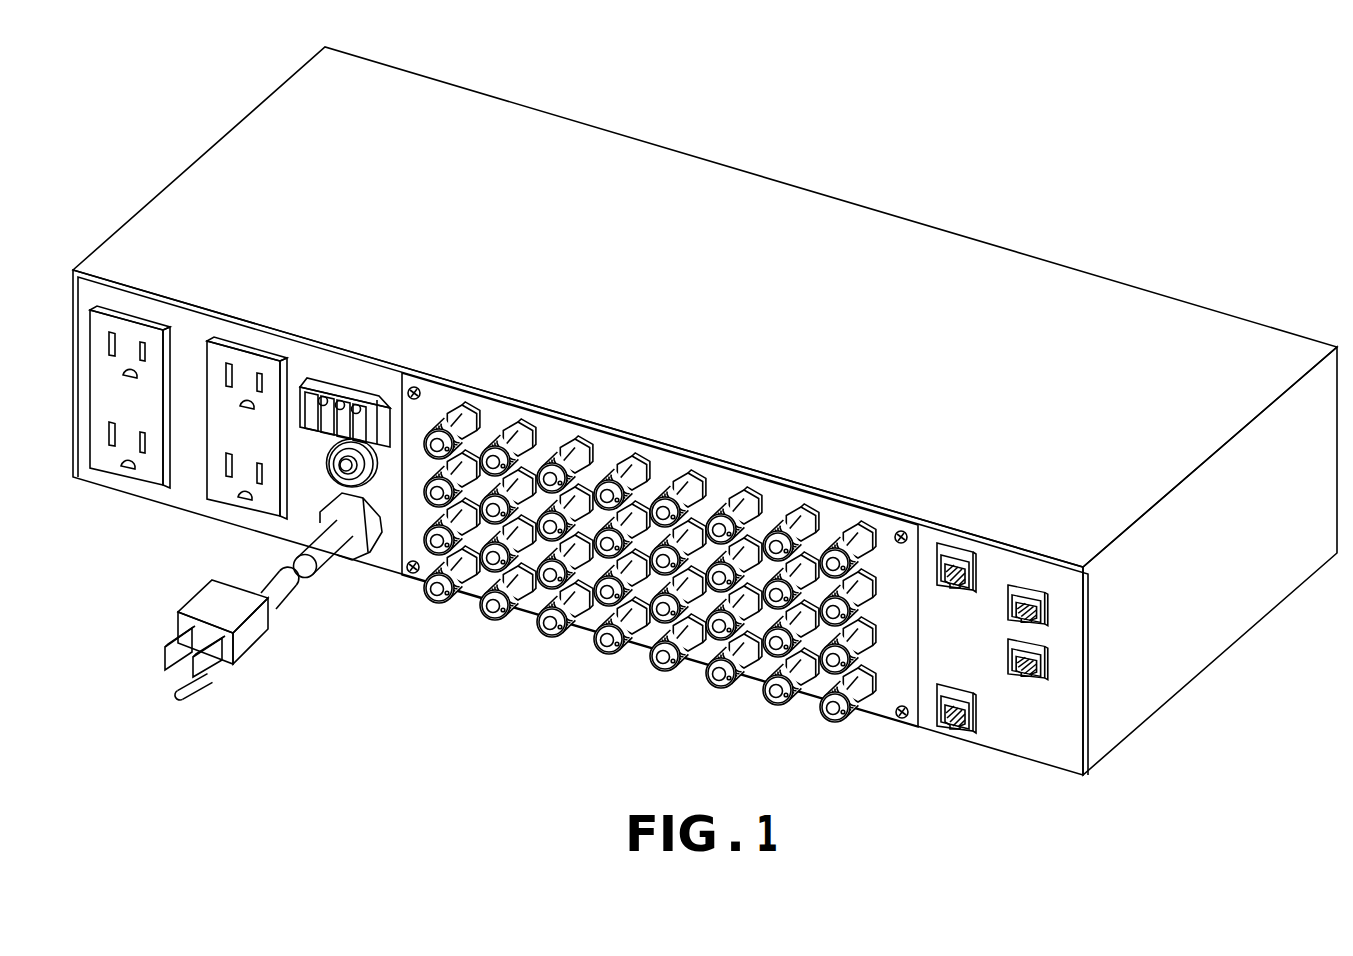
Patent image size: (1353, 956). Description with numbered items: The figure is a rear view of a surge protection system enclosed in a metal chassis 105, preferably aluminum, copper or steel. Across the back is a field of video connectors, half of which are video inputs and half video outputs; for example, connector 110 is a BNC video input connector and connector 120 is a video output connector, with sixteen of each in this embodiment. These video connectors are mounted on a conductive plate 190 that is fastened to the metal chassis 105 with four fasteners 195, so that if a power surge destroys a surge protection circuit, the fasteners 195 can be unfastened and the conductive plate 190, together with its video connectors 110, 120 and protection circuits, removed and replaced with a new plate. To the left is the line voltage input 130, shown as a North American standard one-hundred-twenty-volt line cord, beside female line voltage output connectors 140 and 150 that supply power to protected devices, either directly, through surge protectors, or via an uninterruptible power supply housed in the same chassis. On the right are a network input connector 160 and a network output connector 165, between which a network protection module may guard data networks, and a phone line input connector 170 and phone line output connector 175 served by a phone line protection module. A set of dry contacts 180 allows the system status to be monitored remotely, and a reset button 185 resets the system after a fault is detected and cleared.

The metal chassis 105 is at (1045, 735).
The video input connector 110 is at (824, 519).
The video output connector 120 is at (873, 580).
The line voltage input 130 is at (262, 643).
The female line voltage output connector 140 is at (140, 483).
The female line voltage output connector 150 is at (263, 522).
The network input connector 160 is at (976, 713).
The network output connector 165 is at (976, 570).
The phone line input connector 170 is at (1048, 613).
The phone line output connector 175 is at (1048, 672).
The dry contacts 180 is at (345, 378).
The reset button 185 is at (377, 478).
The conductive plate 190 is at (893, 607).
The fasteners 195 is at (893, 703).